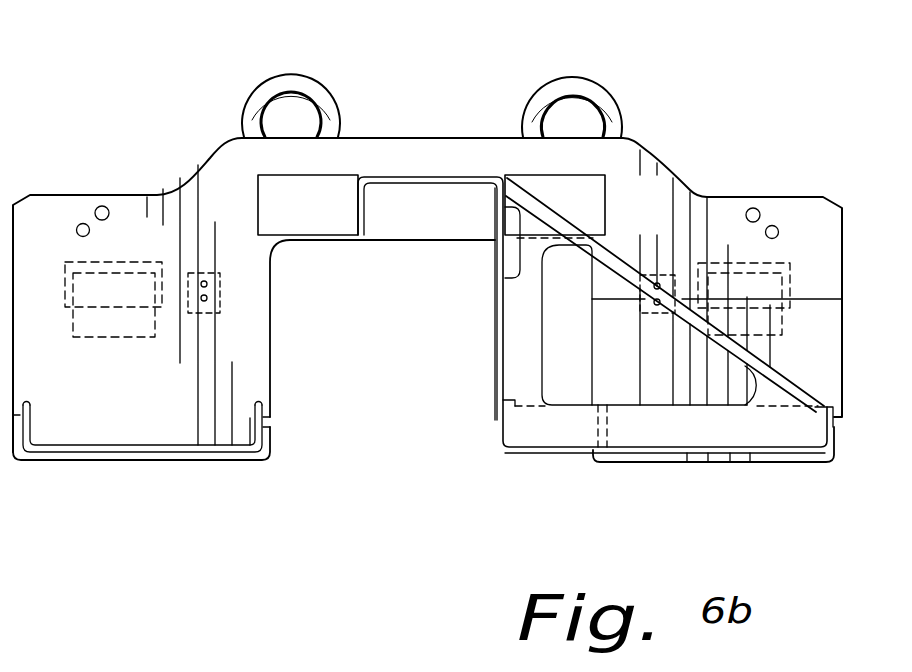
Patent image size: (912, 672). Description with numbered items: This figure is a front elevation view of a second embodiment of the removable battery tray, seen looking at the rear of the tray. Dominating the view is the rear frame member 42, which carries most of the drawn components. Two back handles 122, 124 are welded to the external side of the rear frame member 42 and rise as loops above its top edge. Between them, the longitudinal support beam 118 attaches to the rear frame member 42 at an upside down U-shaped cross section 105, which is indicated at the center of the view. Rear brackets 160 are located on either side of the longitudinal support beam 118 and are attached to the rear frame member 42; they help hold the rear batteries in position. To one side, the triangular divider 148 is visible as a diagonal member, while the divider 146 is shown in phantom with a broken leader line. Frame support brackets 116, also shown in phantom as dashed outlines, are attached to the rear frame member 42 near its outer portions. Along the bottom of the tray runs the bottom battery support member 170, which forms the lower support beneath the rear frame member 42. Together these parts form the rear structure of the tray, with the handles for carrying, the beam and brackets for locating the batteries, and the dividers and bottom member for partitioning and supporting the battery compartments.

The rear frame member 42 is at (813, 207).
The upside down U-shaped cross section 105 is at (433, 195).
The frame support brackets 116 is at (93, 295).
The longitudinal support beam 118 is at (460, 175).
The back handle 122 is at (310, 78).
The back handle 124 is at (598, 82).
The divider 146 is at (753, 427).
The triangular divider 148 is at (677, 300).
The rear brackets 160 is at (320, 175).
The bottom battery support member 170 is at (162, 452).